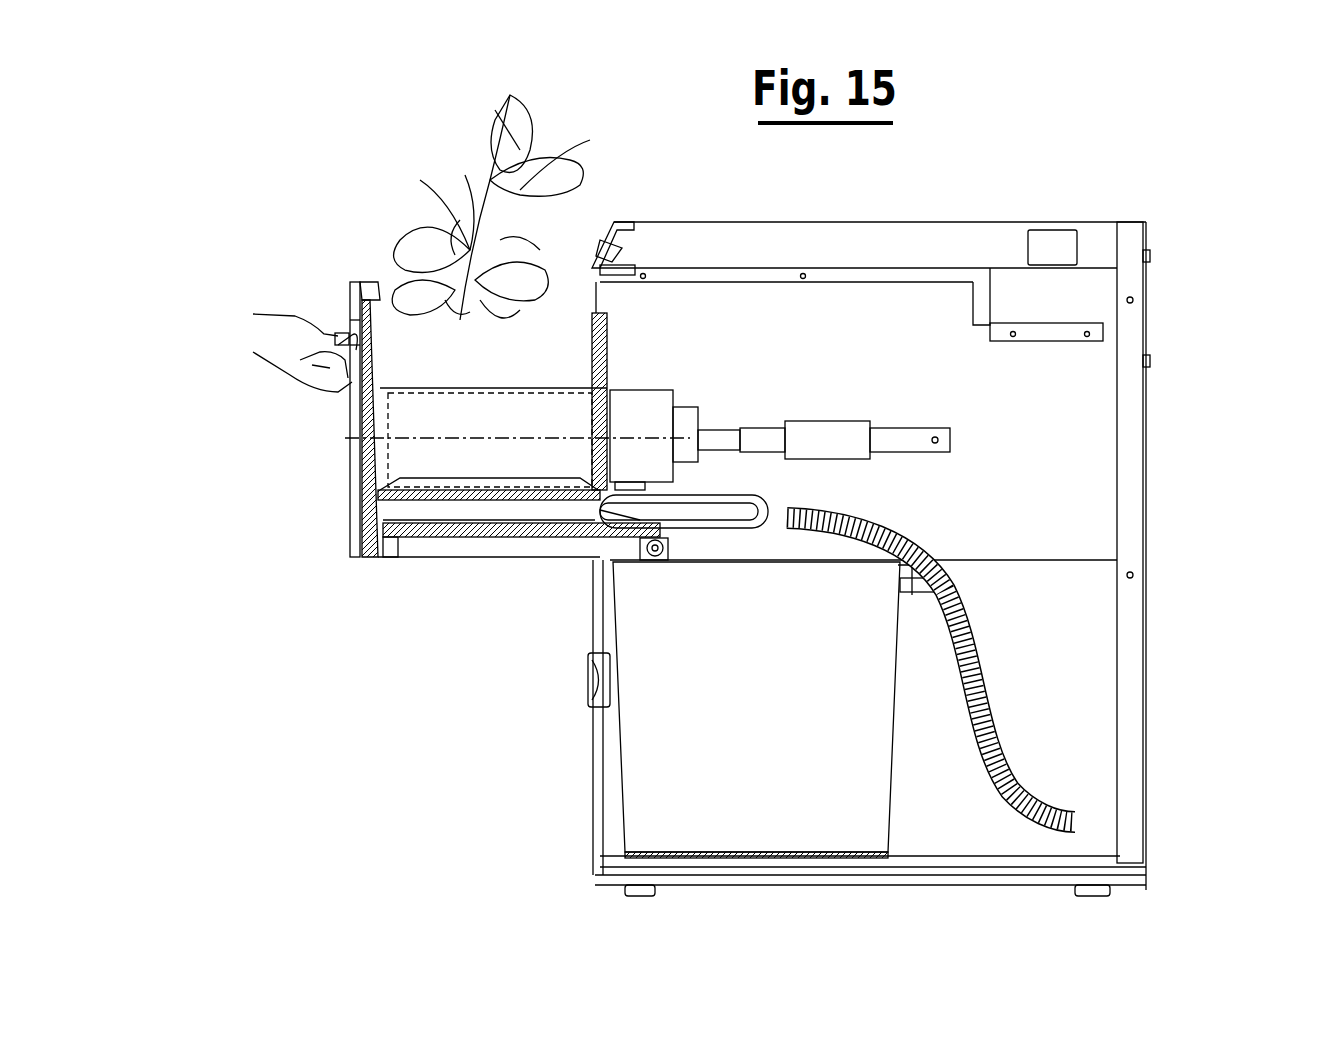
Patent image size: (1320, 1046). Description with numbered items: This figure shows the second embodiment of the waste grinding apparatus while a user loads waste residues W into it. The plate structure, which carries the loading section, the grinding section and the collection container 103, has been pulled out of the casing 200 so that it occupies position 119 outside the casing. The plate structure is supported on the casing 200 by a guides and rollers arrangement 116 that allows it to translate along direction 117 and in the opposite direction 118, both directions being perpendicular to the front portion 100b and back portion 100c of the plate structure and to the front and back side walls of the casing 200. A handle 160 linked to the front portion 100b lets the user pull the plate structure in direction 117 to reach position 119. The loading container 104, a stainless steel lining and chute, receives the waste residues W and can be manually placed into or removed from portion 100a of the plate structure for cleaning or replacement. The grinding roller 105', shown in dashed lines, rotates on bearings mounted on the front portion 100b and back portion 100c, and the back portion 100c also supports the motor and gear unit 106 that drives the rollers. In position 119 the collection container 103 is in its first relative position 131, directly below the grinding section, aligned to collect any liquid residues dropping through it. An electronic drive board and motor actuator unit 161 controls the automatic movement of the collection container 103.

The casing 200 is at (1158, 270).
The portion of plate structure 100a is at (600, 325).
The front portion of plate structure 100b is at (368, 455).
The back portion of plate structure 100c is at (615, 402).
The collection container 103 is at (388, 515).
The loading container 104 is at (378, 285).
The grinding roller 105' is at (454, 439).
The motor and gear unit 106 is at (673, 400).
The guides and rollers arrangement 116 is at (850, 440).
The direction 117 is at (165, 730).
The direction 118 is at (167, 834).
The position 119 is at (185, 325).
The relative position 131 is at (505, 572).
The handle 160 is at (358, 297).
The electronic drive board and motor actuator unit 161 is at (1043, 228).
The waste residues W is at (500, 140).